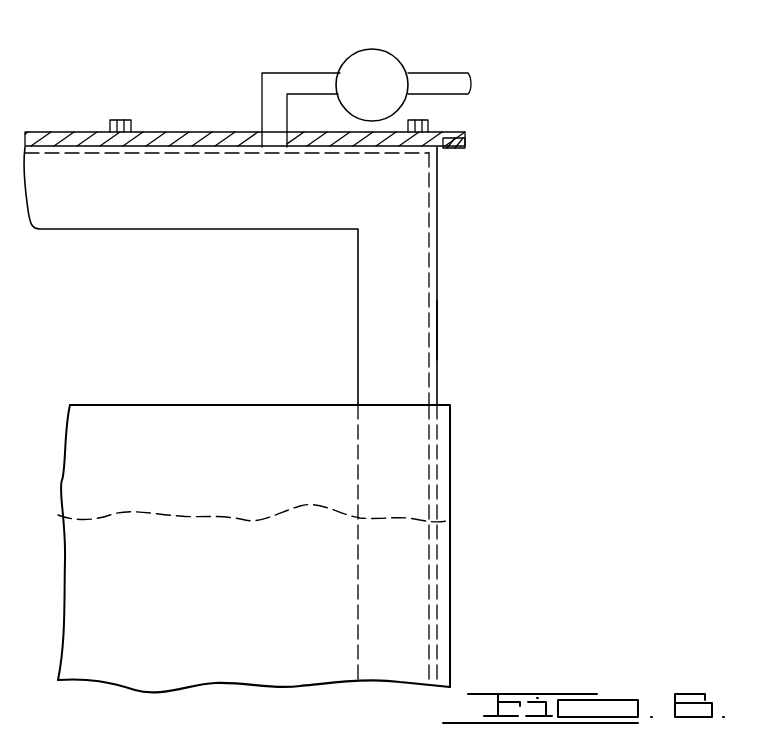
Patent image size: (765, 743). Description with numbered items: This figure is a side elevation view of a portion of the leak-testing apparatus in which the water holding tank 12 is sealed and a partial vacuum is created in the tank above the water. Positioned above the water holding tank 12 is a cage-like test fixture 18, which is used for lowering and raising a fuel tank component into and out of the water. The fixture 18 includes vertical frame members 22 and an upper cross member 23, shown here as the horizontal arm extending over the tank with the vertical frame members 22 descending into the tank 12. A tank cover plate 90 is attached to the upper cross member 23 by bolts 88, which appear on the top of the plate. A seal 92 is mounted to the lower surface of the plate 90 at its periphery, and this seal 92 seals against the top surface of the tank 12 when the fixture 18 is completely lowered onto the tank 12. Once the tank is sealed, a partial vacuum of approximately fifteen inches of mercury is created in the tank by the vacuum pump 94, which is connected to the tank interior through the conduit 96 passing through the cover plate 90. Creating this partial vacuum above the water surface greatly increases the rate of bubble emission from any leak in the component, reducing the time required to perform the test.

The water holding tank 12 is at (452, 550).
The test fixture 18 is at (448, 353).
The vertical frame members 22 is at (418, 258).
The upper cross member 23 is at (181, 217).
The bolts 88 is at (119, 119).
The tank cover plate 90 is at (202, 134).
The seal 92 is at (451, 149).
The vacuum pump 94 is at (389, 66).
The conduit 96 is at (294, 83).